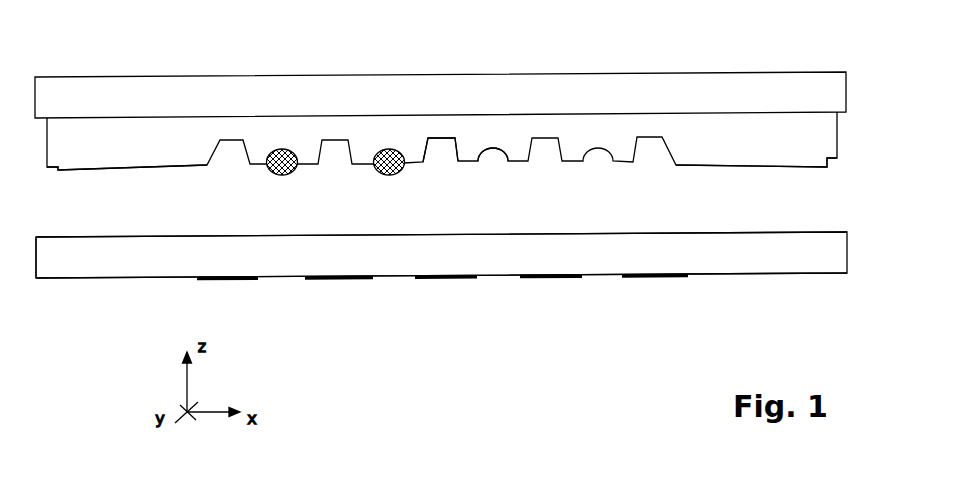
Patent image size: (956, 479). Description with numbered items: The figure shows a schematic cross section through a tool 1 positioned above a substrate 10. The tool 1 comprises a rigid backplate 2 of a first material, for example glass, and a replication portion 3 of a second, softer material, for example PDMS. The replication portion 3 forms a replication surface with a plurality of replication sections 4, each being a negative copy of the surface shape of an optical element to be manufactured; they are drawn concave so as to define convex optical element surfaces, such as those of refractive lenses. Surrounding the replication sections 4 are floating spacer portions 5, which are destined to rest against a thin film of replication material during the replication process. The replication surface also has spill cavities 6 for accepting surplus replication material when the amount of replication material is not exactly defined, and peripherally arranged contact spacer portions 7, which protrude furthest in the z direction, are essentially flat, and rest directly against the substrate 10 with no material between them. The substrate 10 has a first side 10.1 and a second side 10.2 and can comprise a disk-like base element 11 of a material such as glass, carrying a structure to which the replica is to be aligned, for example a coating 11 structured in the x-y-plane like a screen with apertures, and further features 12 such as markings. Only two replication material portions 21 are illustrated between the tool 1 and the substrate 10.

The tool 1 is at (194, 57).
The rigid backplate 2 is at (605, 92).
The replication portion 3 is at (496, 125).
The replication sections 4 is at (499, 168).
The floating spacer portions 5 is at (250, 164).
The spill cavities 6 is at (436, 168).
The contact spacer portions 7 is at (122, 167).
The substrate 10 is at (708, 301).
The first side 10.1 is at (687, 232).
The second side 10.2 is at (498, 280).
The coating 11 is at (226, 281).
The further features 12 is at (155, 238).
The replication material portions 21 is at (382, 168).